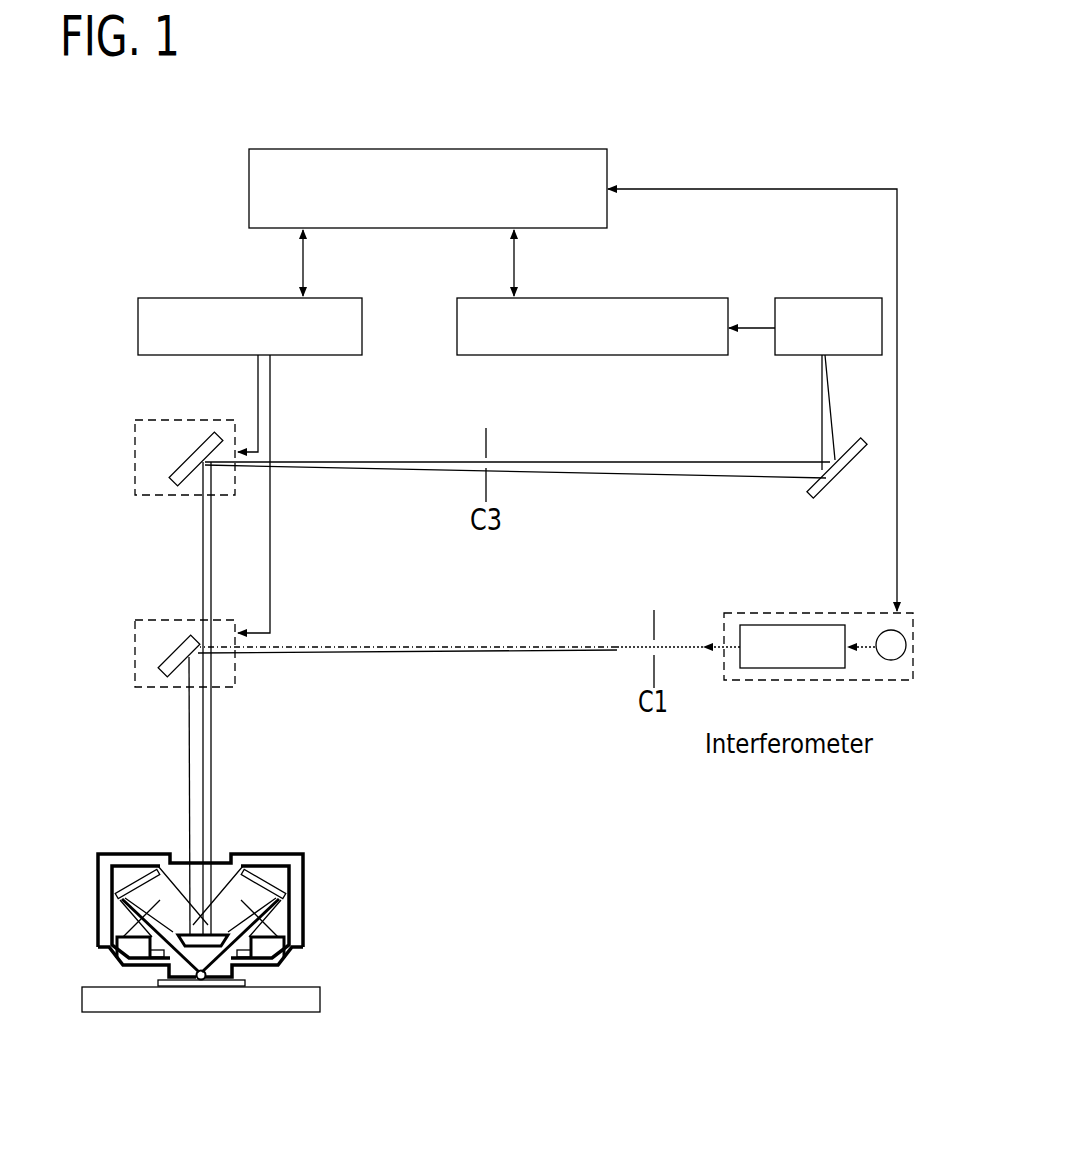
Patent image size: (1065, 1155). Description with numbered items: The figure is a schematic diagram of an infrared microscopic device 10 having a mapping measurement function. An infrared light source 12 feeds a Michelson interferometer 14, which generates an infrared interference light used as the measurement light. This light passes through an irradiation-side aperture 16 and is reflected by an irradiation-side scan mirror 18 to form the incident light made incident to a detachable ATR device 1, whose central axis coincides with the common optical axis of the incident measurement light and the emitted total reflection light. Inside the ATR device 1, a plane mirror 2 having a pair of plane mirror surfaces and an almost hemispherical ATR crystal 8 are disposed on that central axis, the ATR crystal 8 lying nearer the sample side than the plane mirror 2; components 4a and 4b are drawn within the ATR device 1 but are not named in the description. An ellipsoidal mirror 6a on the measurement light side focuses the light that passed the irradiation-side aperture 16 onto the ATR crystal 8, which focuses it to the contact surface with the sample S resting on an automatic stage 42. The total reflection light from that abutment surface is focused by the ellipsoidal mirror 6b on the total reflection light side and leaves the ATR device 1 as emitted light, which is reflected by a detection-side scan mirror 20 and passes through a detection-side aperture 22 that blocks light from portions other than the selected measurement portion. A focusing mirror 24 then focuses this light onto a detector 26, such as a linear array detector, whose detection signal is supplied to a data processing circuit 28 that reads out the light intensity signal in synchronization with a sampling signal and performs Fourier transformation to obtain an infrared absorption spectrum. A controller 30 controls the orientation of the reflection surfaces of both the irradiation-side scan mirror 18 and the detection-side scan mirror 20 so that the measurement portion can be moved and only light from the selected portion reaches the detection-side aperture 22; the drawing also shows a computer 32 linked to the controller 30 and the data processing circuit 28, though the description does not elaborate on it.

The infrared microscopic device 10 is at (160, 138).
The computer 32 is at (428, 188).
The controller 30 is at (250, 326).
The data processing circuit 28 is at (592, 326).
The detector 26 is at (827, 298).
The focusing mirror 24 is at (828, 488).
The detection-side aperture 22 is at (481, 459).
The detection-side scan mirror 20 is at (201, 440).
The irradiation-side scan mirror 18 is at (168, 655).
The irradiation-side aperture 16 is at (647, 654).
The Michelson interferometer 14 is at (787, 670).
The infrared light source 12 is at (890, 661).
The ATR device 1 is at (413, 897).
The plane mirror 2 is at (207, 923).
The mirror 4a is at (158, 873).
The mirror 4b is at (248, 874).
The ellipsoidal mirror 6a is at (125, 945).
The ellipsoidal mirror 6b is at (280, 945).
The ATR crystal 8 is at (198, 978).
The sample S is at (220, 986).
The automatic stage 42 is at (288, 1012).